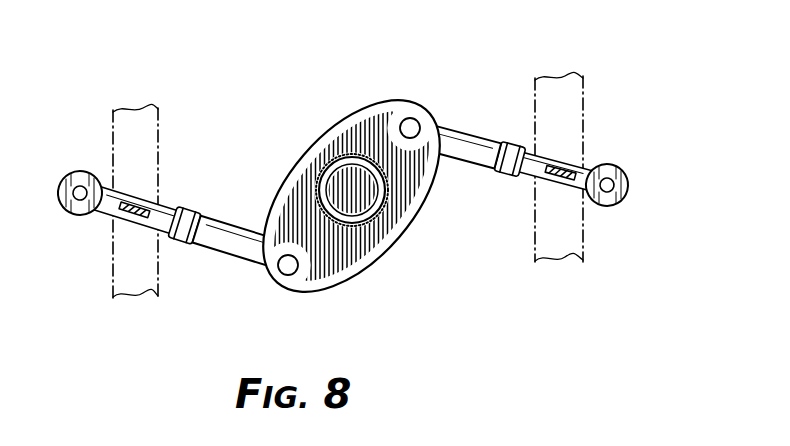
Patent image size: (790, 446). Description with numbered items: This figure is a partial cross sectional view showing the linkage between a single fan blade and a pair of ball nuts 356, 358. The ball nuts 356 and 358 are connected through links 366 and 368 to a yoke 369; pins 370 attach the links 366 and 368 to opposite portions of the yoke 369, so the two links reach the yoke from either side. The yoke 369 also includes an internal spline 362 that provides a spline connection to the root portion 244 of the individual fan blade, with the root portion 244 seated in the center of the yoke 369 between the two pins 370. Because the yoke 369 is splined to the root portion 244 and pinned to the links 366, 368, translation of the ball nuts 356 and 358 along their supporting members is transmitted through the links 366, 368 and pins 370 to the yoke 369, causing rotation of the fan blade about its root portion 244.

The root portion 244 is at (366, 204).
The ball nut 356 is at (158, 148).
The ball nut 358 is at (537, 241).
The internal spline 362 is at (340, 153).
The link 366 is at (128, 217).
The link 368 is at (578, 158).
The yoke 369 is at (338, 287).
The pin 370 is at (413, 122).